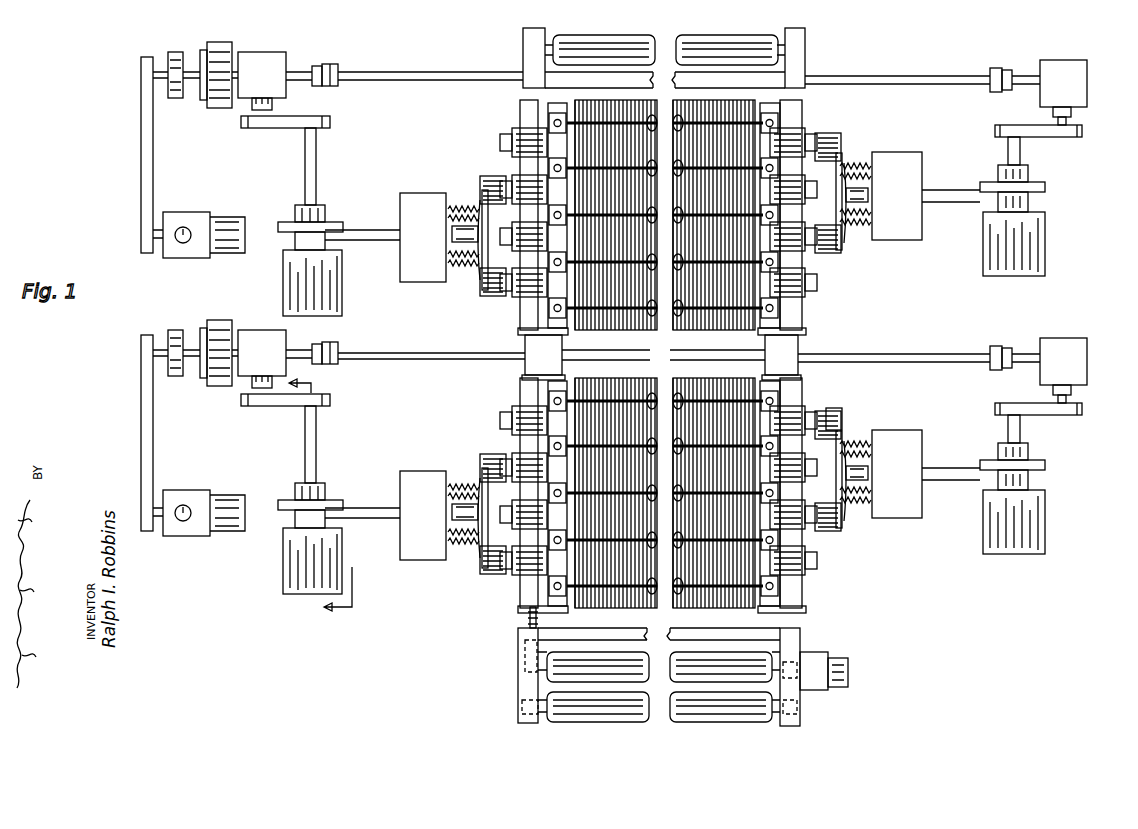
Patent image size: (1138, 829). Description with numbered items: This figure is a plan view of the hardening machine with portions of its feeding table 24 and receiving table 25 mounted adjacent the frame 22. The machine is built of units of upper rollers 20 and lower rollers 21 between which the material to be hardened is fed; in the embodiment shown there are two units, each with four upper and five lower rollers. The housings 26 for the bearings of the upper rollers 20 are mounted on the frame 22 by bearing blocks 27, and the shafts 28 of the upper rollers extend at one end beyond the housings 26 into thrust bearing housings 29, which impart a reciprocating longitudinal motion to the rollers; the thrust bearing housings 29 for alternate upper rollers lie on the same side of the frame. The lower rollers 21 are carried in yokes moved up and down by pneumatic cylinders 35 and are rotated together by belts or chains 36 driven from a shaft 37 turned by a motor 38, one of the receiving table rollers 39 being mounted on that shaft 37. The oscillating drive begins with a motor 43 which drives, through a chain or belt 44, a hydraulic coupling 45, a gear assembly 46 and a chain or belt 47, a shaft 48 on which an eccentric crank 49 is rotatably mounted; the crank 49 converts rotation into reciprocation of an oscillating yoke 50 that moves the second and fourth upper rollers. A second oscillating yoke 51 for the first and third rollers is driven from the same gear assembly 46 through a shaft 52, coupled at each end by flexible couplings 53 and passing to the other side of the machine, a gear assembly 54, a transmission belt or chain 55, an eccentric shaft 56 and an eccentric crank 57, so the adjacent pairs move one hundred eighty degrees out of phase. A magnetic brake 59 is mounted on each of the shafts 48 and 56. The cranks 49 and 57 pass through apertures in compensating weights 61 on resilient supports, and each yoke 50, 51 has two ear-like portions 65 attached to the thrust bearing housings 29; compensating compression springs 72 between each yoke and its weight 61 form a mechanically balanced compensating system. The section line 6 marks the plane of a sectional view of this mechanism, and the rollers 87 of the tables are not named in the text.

The section line 6- 6 is at (331, 496).
The upper rollers 20 is at (592, 334).
The lower rollers 21 is at (676, 354).
The frame 22 is at (552, 354).
The feeding table 24 is at (538, 28).
The receiving table 25 is at (518, 688).
The housings 26 is at (510, 125).
The bearing blocks 27 is at (536, 115).
The shafts 28 is at (820, 410).
The thrust bearing housings 29 is at (492, 174).
The pneumatic cylinders 35 is at (552, 122).
The belts or chains 36 is at (528, 620).
The shaft 37 is at (524, 660).
The motor or prime mover 38 is at (814, 690).
The receiving table rollers 39 is at (644, 720).
The motor or prime mover 43 is at (190, 208).
The chain or belt 44 is at (153, 143).
The hydraulic coupling 45 is at (220, 42).
The gear assembly 46 is at (277, 54).
The chain or belt 47 is at (306, 116).
The shaft 48 is at (305, 160).
The eccentric crank 49 is at (366, 222).
The oscillating yoke 50 is at (448, 212).
The oscillating yoke 51 is at (870, 175).
The shaft 52 is at (390, 66).
The flexible couplings 53 is at (331, 66).
The gear assembly 54 is at (1084, 60).
The transmission belt or chain 55 is at (1066, 136).
The eccentric shaft 56 is at (1020, 152).
The eccentric crank 57 is at (938, 186).
The magnetic brake 59 is at (283, 272).
The compensating weights 61 is at (400, 268).
The ear-like portions 65 is at (480, 177).
The compensating compression springs 72 is at (448, 264).
The upper rollers 87 is at (604, 34).